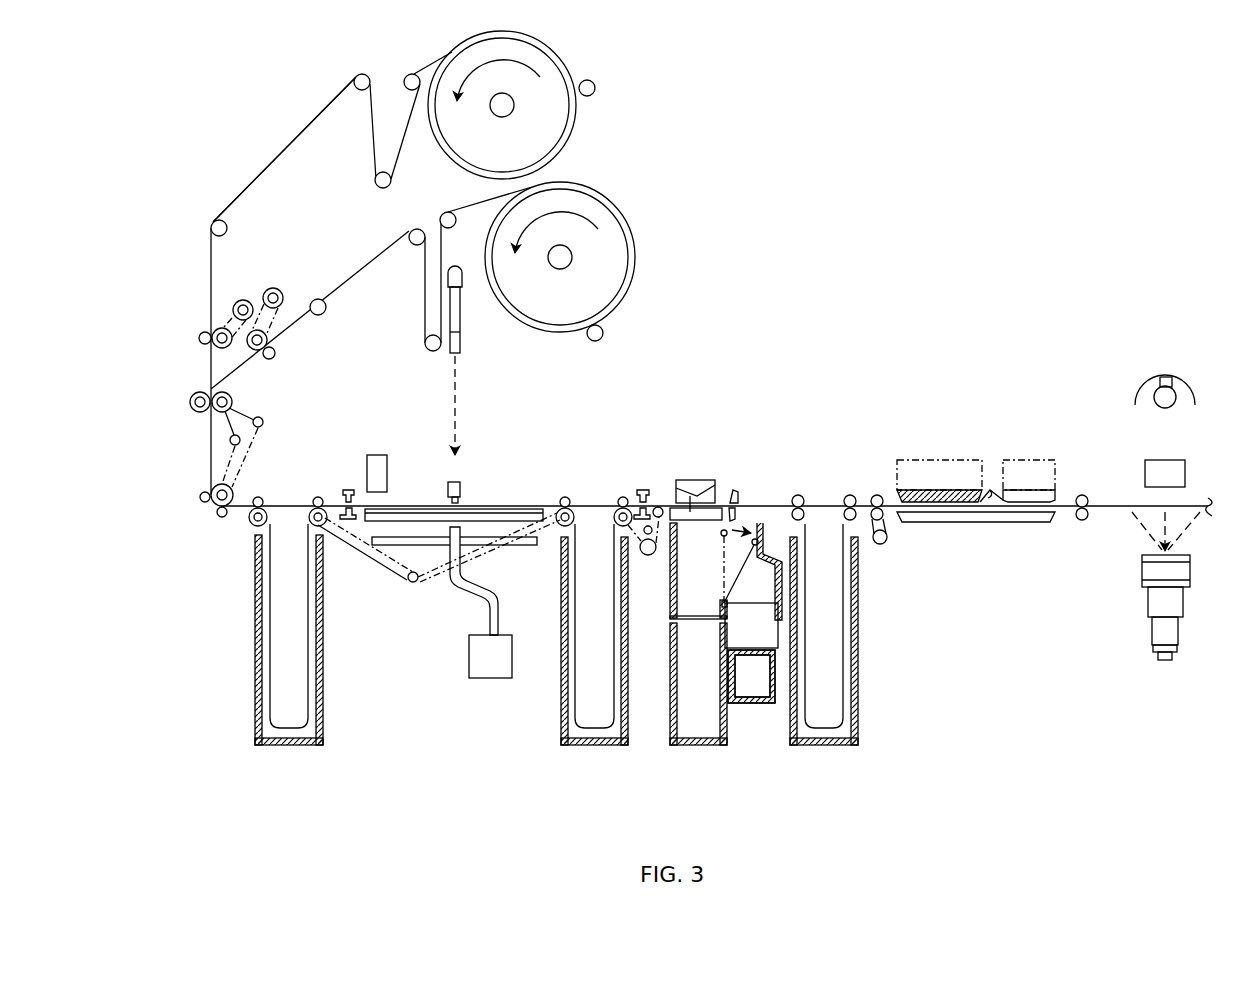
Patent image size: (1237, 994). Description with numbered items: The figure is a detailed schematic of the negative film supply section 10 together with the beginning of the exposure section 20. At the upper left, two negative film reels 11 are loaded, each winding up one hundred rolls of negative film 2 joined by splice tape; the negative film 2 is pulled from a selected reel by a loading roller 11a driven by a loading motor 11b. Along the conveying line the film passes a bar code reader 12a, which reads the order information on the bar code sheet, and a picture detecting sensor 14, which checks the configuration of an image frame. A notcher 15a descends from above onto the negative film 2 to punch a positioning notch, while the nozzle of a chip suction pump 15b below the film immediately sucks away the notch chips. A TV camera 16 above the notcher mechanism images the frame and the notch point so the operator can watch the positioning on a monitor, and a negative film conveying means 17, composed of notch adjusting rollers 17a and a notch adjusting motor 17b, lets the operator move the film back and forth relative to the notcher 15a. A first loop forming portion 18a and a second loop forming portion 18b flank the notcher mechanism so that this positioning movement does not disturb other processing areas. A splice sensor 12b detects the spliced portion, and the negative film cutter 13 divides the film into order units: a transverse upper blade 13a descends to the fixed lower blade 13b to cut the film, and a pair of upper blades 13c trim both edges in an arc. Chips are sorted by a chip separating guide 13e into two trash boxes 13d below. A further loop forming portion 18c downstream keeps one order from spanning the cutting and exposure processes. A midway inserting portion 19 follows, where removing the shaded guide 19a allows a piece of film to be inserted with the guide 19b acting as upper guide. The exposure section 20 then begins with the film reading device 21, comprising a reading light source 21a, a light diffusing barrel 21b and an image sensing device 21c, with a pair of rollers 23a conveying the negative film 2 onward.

The negative film supply section 10 is at (274, 116).
The negative film reel 11 is at (553, 116).
The loading roller 11a is at (226, 348).
The loading motor 11b is at (247, 299).
The bar code reader 12a is at (376, 455).
The splice sensor 12b is at (643, 491).
The negative film cutter 13 is at (723, 458).
The upper blade 13a is at (734, 497).
The lower blade 13b is at (688, 497).
The pair of upper blades 13c is at (702, 497).
The trash box 13d is at (670, 730).
The chip separating guide 13e is at (757, 553).
The picture detecting sensor 14 is at (347, 489).
The notcher 15a is at (460, 482).
The chip suction pump 15b is at (505, 678).
The TV camera 16 is at (463, 322).
The negative film conveying means 17 is at (390, 577).
The notch adjusting rollers 17a is at (404, 588).
The notch adjusting motor 17b is at (307, 510).
The first loop forming portion 18a is at (311, 671).
The second loop forming portion 18b is at (570, 596).
The loop forming portion 18c is at (849, 677).
The midway inserting portion 19 is at (990, 474).
The guide 19a is at (912, 488).
The guide 19b is at (1025, 487).
The negative film 2 is at (945, 512).
The exposure section 20 is at (1067, 271).
The film reading device 21 is at (1173, 361).
The reading light source 21a is at (1140, 388).
The light diffusing barrel 21b is at (1145, 463).
The image sensing device 21c is at (1147, 603).
The pair of rollers 23a is at (1085, 520).